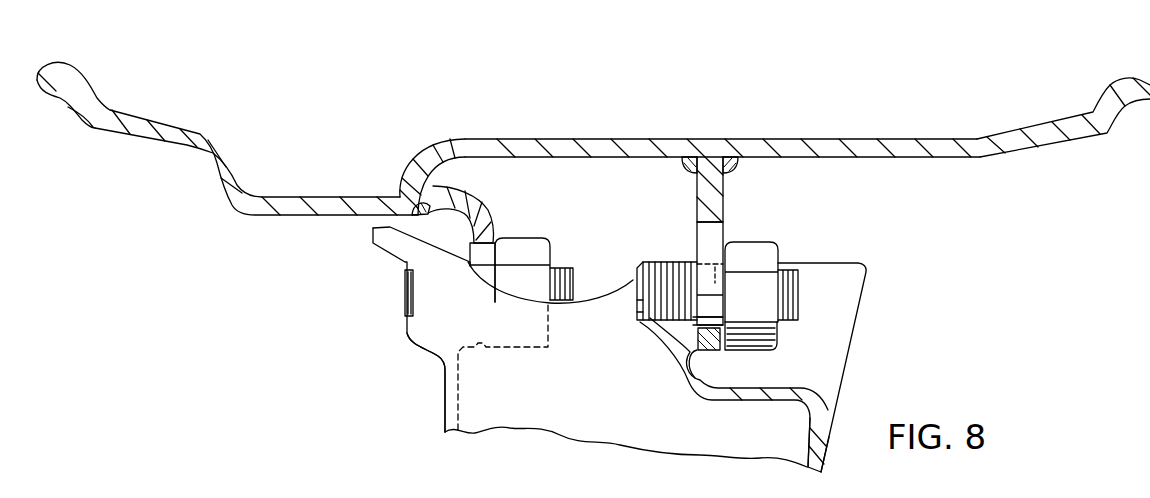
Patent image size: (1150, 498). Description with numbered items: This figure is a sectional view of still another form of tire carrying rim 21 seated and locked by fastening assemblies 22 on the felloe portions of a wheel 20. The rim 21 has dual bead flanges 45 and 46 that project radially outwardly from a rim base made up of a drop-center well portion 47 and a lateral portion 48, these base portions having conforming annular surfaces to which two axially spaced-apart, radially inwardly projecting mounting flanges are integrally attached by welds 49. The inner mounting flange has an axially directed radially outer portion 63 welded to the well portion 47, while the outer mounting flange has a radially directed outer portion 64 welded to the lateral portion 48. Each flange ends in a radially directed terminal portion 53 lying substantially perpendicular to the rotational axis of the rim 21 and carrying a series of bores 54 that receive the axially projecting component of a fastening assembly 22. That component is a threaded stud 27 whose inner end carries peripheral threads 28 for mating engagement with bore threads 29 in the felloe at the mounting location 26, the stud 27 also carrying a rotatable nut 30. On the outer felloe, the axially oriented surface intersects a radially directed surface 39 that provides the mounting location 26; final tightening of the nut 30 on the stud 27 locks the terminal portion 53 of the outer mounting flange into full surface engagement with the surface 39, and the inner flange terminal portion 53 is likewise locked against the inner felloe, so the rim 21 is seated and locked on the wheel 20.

The wheel 20 is at (423, 434).
The tire carrying rim 21 is at (593, 126).
The fastening assembly 22 is at (545, 224).
The mounting location 26 is at (401, 299).
The threaded stud 27 is at (573, 293).
The peripheral threads 28 is at (638, 306).
The bore threads 29 is at (640, 317).
The nut 30 is at (527, 283).
The radially directed surface 39 is at (704, 342).
The bead flange 45 is at (82, 80).
The bead flange 46 is at (1110, 90).
The well portion 47 is at (297, 207).
The lateral portion 48 is at (830, 145).
The weld 49 is at (416, 206).
The terminal portion 53 is at (483, 266).
The bore 54 is at (720, 312).
The axially directed radially outer portion 63 is at (426, 158).
The radially directed outer portion 64 is at (724, 188).